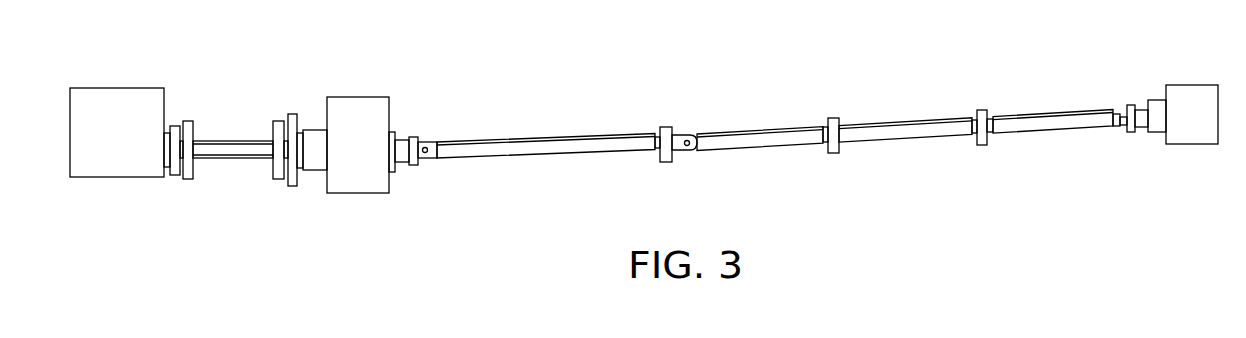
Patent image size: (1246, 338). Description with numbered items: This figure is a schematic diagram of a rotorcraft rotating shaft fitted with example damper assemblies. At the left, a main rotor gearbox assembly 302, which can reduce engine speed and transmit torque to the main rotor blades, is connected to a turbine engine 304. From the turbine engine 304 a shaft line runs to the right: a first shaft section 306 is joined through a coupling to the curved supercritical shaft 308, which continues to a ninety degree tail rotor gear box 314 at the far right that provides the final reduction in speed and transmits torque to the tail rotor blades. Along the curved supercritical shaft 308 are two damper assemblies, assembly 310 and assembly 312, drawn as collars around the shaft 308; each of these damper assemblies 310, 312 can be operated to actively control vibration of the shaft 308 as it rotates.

The main rotor gearbox assembly 302 is at (117, 88).
The turbine engine 304 is at (357, 97).
The first shaft section 306 is at (587, 157).
The curved supercritical shaft 308 is at (905, 142).
The damper assembly 310 is at (833, 118).
The damper assembly 312 is at (983, 110).
The 90 degree tail rotor gear box 314 is at (1190, 85).